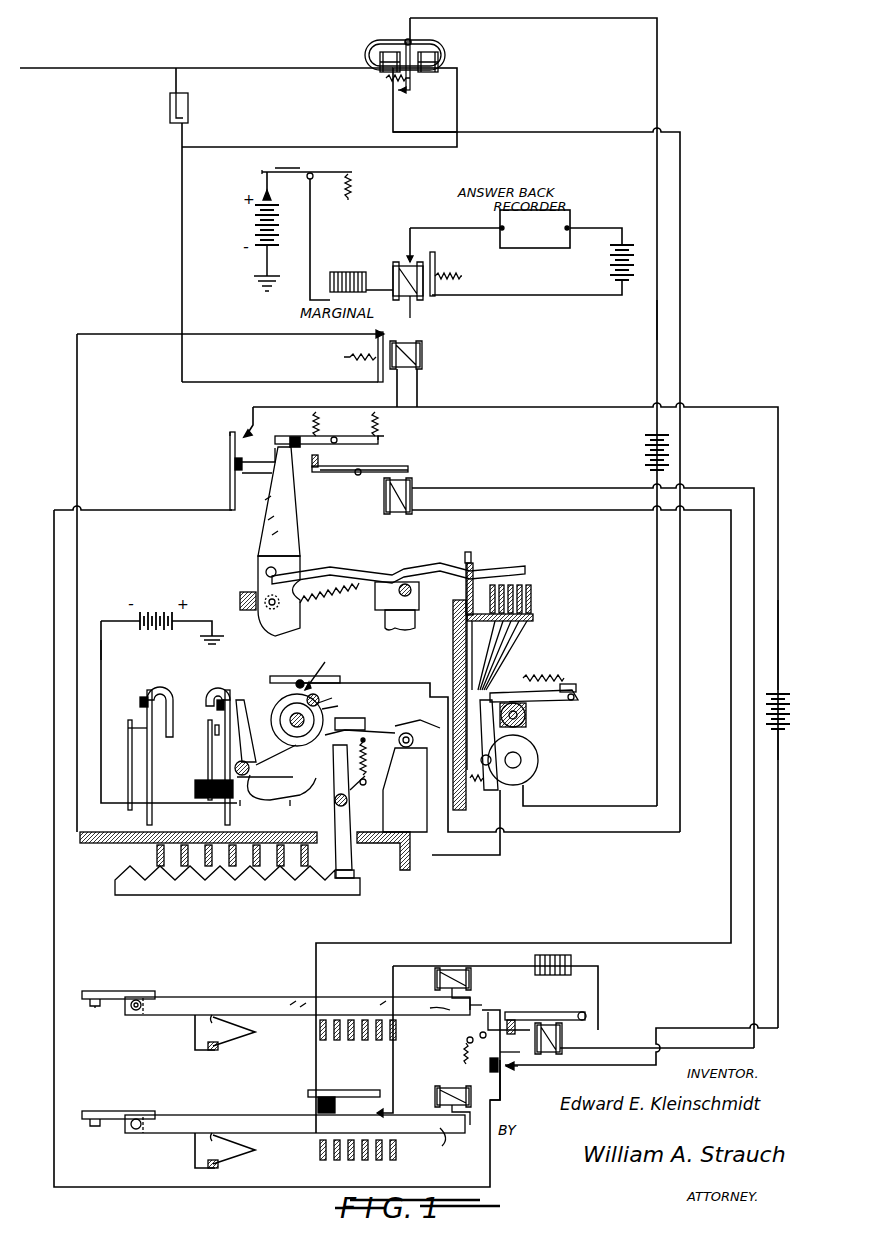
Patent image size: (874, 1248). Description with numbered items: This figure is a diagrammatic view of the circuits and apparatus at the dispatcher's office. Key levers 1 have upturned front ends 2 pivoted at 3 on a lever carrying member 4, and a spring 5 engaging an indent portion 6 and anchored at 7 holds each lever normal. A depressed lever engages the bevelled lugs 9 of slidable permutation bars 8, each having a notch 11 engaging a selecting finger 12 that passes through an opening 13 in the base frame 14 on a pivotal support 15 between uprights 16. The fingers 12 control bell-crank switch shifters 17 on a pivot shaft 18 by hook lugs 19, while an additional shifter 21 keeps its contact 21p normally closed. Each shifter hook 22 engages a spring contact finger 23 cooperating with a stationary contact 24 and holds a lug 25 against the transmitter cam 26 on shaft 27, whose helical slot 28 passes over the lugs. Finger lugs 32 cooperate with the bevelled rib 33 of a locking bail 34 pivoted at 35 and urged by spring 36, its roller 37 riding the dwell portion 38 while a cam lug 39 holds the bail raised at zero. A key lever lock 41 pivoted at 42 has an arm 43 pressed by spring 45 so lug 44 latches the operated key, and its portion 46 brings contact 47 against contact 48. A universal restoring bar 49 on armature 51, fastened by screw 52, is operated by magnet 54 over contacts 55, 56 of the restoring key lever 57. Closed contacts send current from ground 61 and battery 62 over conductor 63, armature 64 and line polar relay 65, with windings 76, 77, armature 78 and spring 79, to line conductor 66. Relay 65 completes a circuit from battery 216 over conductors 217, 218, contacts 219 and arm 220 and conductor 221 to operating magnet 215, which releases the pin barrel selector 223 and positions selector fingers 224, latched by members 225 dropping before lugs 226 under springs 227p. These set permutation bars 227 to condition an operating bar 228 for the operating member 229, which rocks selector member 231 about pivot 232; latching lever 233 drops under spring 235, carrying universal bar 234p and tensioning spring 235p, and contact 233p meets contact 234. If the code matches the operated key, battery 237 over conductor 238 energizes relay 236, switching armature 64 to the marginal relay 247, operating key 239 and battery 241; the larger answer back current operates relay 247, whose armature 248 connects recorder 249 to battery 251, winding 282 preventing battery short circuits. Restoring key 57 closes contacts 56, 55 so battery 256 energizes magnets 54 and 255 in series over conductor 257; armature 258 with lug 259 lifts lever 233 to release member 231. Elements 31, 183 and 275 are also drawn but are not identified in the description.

The key lever 1 is at (290, 996).
The upturned front end 2 is at (464, 1002).
The pivot 3 is at (136, 1010).
The lever carrying member 4 is at (108, 992).
The spring 5 is at (246, 1034).
The indent portion 6 is at (214, 998).
The frame anchorage 7 is at (220, 1050).
The permutation bar 8 is at (386, 1036).
The bevelled lug 9 is at (156, 858).
The notch 11 is at (354, 872).
The selecting finger 12 is at (350, 826).
The opening 13 is at (359, 785).
The base frame 14 is at (390, 834).
The pivotal support 15 is at (334, 799).
The upright 16 is at (392, 782).
The switch shifter 17 is at (282, 787).
The horizontal pivot shaft 18 is at (235, 766).
The hook lug 19 is at (292, 768).
The additional switch shifter 21 is at (168, 694).
The contact 21p is at (130, 750).
The hook 22 is at (222, 686).
The spring contact finger 23 is at (242, 696).
The stationary contact finger 24 is at (208, 742).
The lug 25 is at (276, 807).
The transmitter cam 26 is at (285, 698).
The horizontal shaft 27 is at (312, 693).
The slot 28 is at (245, 807).
The bar 31 is at (308, 672).
The lug 32 is at (352, 723).
The bevelled rib 33 is at (360, 717).
The locking bail 34 is at (402, 732).
The pivot 35 is at (417, 714).
The spring 36 is at (368, 762).
The roller 37 is at (322, 686).
The dwell portion 38 is at (337, 695).
The lug 39 is at (326, 668).
The key lever lock 41 is at (506, 1022).
The pivot 42 is at (480, 1036).
The upwardly extending arm 43 is at (496, 1004).
The lug 44 is at (429, 1007).
The spring 45 is at (462, 1060).
The downwardly extending portion 46 is at (515, 1055).
The contact member 47 is at (504, 1078).
The contact 48 is at (520, 1066).
The universal restoring bar 49 is at (544, 1024).
The armature 51 is at (578, 1010).
The screw 52 is at (520, 1012).
The magnet 54 is at (590, 1046).
The contact 55 is at (560, 1064).
The movable contacting member 56 is at (352, 1092).
The restoring key lever 57 is at (452, 1143).
The ground 61 is at (228, 620).
The battery 62 is at (150, 614).
The conductor 63 is at (85, 604).
The armature 64 is at (376, 368).
The line polar relay 65 is at (404, 30).
The conductor 66 is at (135, 60).
The winding 76 is at (367, 52).
The winding 77 is at (445, 55).
The armature 78 is at (412, 82).
The spring 79 is at (386, 77).
The rack 183 is at (230, 884).
The operating magnet 215 is at (538, 760).
The battery 216 is at (644, 456).
The conductor 217 is at (652, 322).
The conductor 218 is at (684, 262).
The contacts 219 is at (490, 756).
The arm 220 is at (450, 672).
The conductor 221 is at (436, 856).
The pin barrel selector 223 is at (528, 712).
The selector finger 224 is at (530, 640).
The pivoted latching member 225 is at (550, 674).
The projecting lug 226 is at (512, 690).
The permutation bar 227 is at (540, 592).
The spring 227p is at (578, 686).
The operating bar 228 is at (368, 566).
The operating member 229 is at (372, 596).
The selector member 231 is at (292, 552).
The pivot 232 is at (268, 616).
The latching lever 233 is at (322, 436).
The contact 233p is at (230, 432).
The contact 234 is at (278, 436).
The universal bar 234p is at (316, 414).
The spring 235 is at (376, 436).
The spring 235p is at (375, 412).
The relay 236 is at (420, 358).
The battery 237 is at (770, 707).
The conductor 238 is at (778, 652).
The operating key 239 is at (310, 172).
The battery 241 is at (254, 220).
The marginal relay 247 is at (410, 275).
The armature 248 is at (440, 266).
The recorder 249 is at (548, 230).
The battery 251 is at (612, 258).
The magnet 255 is at (412, 486).
The battery 256 is at (560, 956).
The conductor 257 is at (392, 819).
The armature 258 is at (365, 470).
The lug 259 is at (318, 470).
The fuse 275 is at (188, 108).
The winding 282 is at (348, 262).